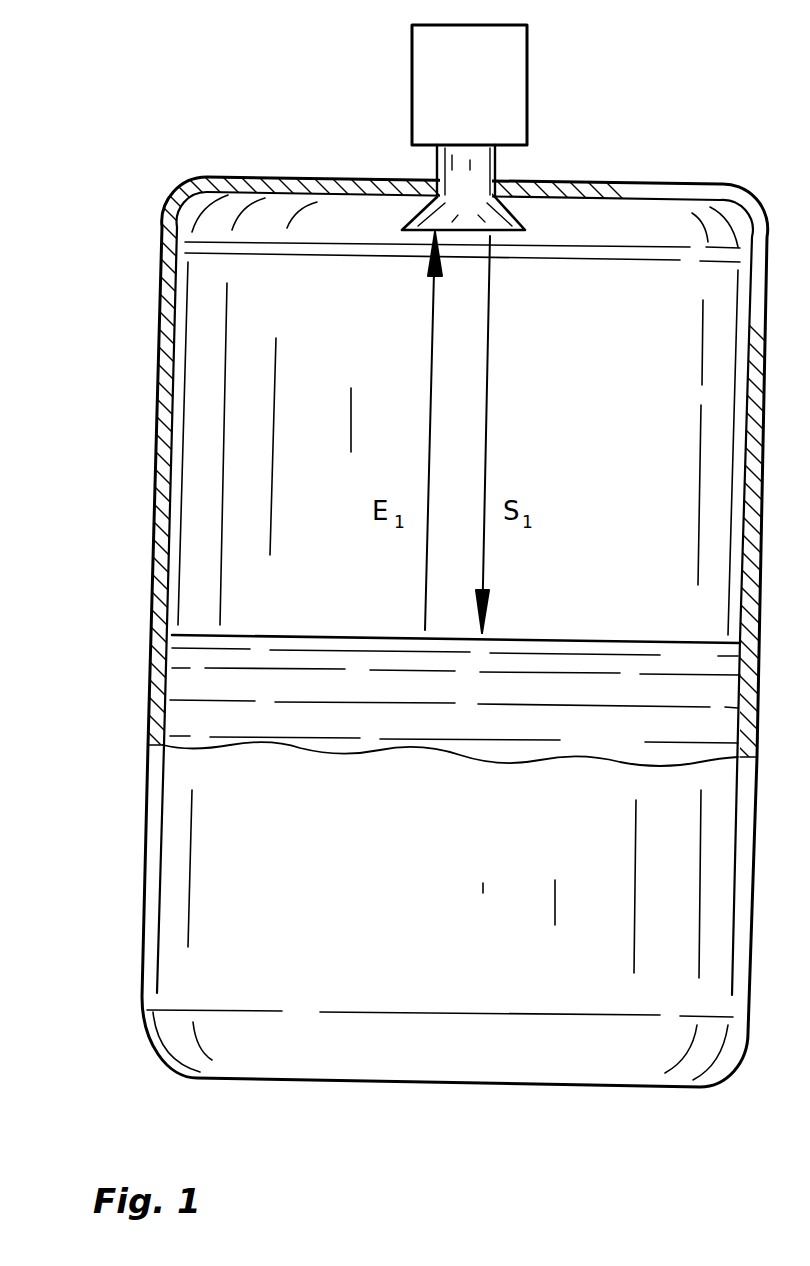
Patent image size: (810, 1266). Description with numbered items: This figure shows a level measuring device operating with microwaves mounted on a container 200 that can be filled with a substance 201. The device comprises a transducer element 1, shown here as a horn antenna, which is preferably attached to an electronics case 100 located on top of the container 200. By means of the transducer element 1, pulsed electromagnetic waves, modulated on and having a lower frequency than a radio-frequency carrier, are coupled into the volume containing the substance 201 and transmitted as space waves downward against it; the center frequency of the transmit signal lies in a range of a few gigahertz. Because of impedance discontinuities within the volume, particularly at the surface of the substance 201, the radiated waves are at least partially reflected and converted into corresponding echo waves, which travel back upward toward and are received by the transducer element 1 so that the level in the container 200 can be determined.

The electronics case 100 is at (405, 111).
The transducer element 1 is at (513, 210).
The container 200 is at (167, 332).
The substance 201 is at (180, 672).